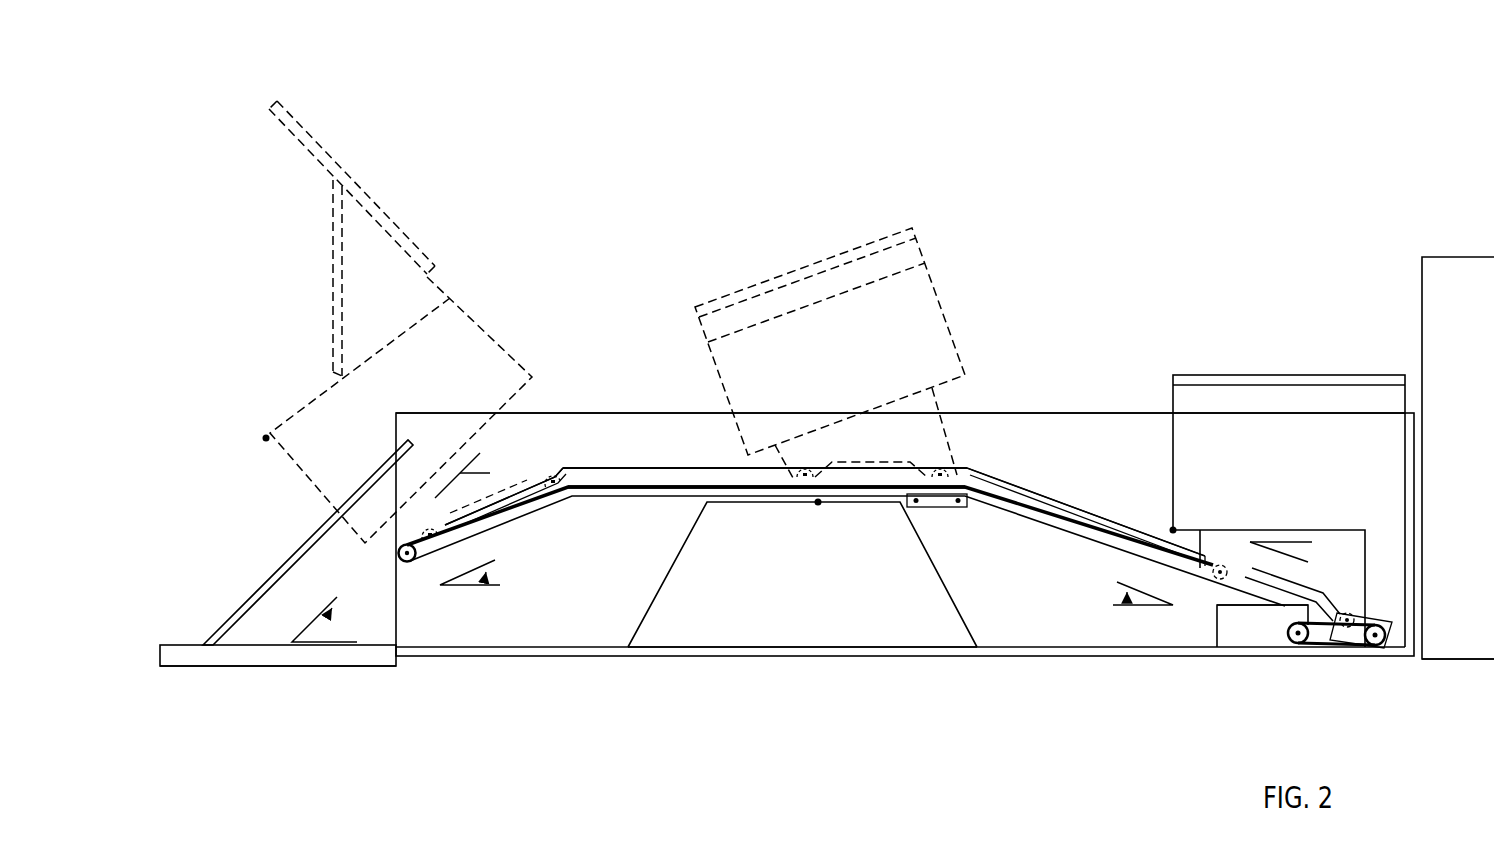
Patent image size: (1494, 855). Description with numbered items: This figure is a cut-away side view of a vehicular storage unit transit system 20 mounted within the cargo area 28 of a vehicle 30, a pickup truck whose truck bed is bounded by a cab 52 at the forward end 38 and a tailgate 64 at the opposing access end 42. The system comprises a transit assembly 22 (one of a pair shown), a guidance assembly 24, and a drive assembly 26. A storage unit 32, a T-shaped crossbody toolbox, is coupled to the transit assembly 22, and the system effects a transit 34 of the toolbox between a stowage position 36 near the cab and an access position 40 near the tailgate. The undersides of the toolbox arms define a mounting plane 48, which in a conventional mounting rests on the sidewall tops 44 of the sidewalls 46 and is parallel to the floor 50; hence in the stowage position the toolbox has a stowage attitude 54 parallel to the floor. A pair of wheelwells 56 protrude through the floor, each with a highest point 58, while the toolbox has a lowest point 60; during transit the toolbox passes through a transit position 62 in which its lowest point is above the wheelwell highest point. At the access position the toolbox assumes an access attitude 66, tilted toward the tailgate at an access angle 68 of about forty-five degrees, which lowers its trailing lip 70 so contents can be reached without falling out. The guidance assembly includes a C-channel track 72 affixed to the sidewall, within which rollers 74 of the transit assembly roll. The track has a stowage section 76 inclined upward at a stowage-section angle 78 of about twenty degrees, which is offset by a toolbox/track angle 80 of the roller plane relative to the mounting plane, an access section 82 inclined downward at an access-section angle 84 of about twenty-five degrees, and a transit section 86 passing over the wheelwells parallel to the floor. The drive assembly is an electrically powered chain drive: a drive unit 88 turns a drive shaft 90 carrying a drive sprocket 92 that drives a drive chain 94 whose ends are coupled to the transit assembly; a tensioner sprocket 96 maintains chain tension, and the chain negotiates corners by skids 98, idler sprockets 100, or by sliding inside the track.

The vehicular storage unit transit system 20 is at (1155, 798).
The transit assembly 22 is at (1340, 577).
The guidance assembly 24 is at (997, 488).
The drive assembly 26 is at (1243, 628).
The cargo area 28 is at (1152, 252).
The vehicle 30 is at (1377, 253).
The storage unit 32 is at (1278, 400).
The transit 34 is at (950, 98).
The stowage position 36 is at (1270, 290).
The forward end 38 is at (1410, 675).
The access position 40 is at (383, 188).
The access end 42 is at (397, 683).
The sidewall top 44 is at (960, 412).
The sidewall 46 is at (612, 453).
The mounting plane 48 is at (1225, 412).
The floor 50 is at (735, 647).
The cab 52 is at (1455, 277).
The stowage attitude 54 is at (1228, 338).
The wheelwell 56 is at (765, 620).
The highest point 58 is at (818, 502).
The lowest point 60 is at (1173, 530).
The transit position 62 is at (815, 240).
The tailgate 64 is at (293, 657).
The access attitude 66 is at (462, 270).
The access angle 68 is at (338, 625).
The trailing lip 70 is at (266, 438).
The track 72 is at (630, 468).
The roller 74 is at (1222, 562).
The stowage section 76 is at (1110, 518).
The stowage-section angle 78 is at (1115, 605).
The toolbox/track angle 80 is at (481, 468).
The access section 82 is at (565, 470).
The access-section angle 84 is at (500, 585).
The transit section 86 is at (722, 470).
The drive unit 88 is at (1247, 635).
The drive shaft 90 is at (1378, 625).
The drive sprocket 92 is at (1363, 645).
The drive chain 94 is at (1213, 587).
The tensioner sprocket 96 is at (972, 512).
The skid 98 is at (563, 493).
The idler sprocket 100 is at (413, 560).